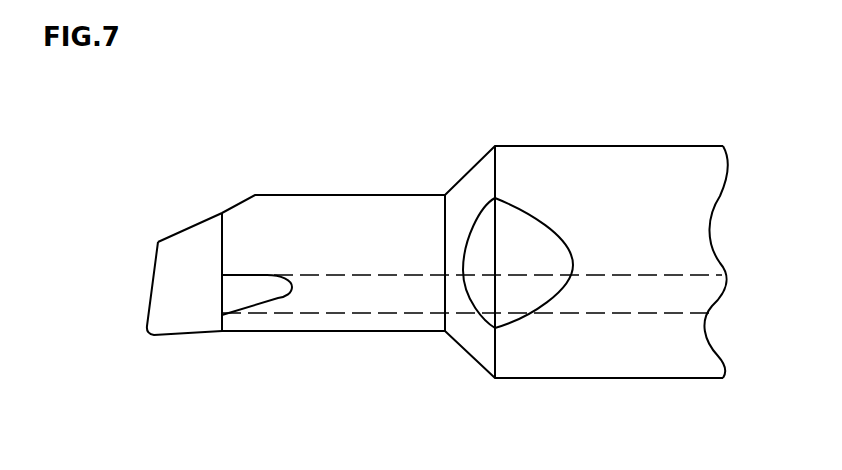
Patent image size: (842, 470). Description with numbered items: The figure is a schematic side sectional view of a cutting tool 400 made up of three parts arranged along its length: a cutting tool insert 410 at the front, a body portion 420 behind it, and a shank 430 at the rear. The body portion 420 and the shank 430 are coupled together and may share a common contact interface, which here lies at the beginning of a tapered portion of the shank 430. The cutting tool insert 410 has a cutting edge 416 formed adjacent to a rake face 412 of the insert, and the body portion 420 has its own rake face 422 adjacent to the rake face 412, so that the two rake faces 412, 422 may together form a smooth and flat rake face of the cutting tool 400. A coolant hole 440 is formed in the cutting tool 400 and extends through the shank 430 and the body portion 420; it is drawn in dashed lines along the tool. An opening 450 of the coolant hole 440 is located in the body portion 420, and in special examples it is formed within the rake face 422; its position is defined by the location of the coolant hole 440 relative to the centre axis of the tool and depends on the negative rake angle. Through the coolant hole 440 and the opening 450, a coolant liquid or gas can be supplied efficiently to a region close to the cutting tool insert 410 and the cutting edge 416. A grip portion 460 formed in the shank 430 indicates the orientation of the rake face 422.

The cutting tool 400 is at (717, 108).
The cutting tool insert 410 is at (166, 358).
The rake face 412 is at (208, 265).
The cutting edge 416 is at (155, 272).
The body portion 420 is at (363, 181).
The rake face 422 is at (222, 213).
The shank 430 is at (667, 228).
The coolant hole 440 is at (630, 316).
The opening 450 is at (286, 278).
The grip portion 460 is at (540, 218).